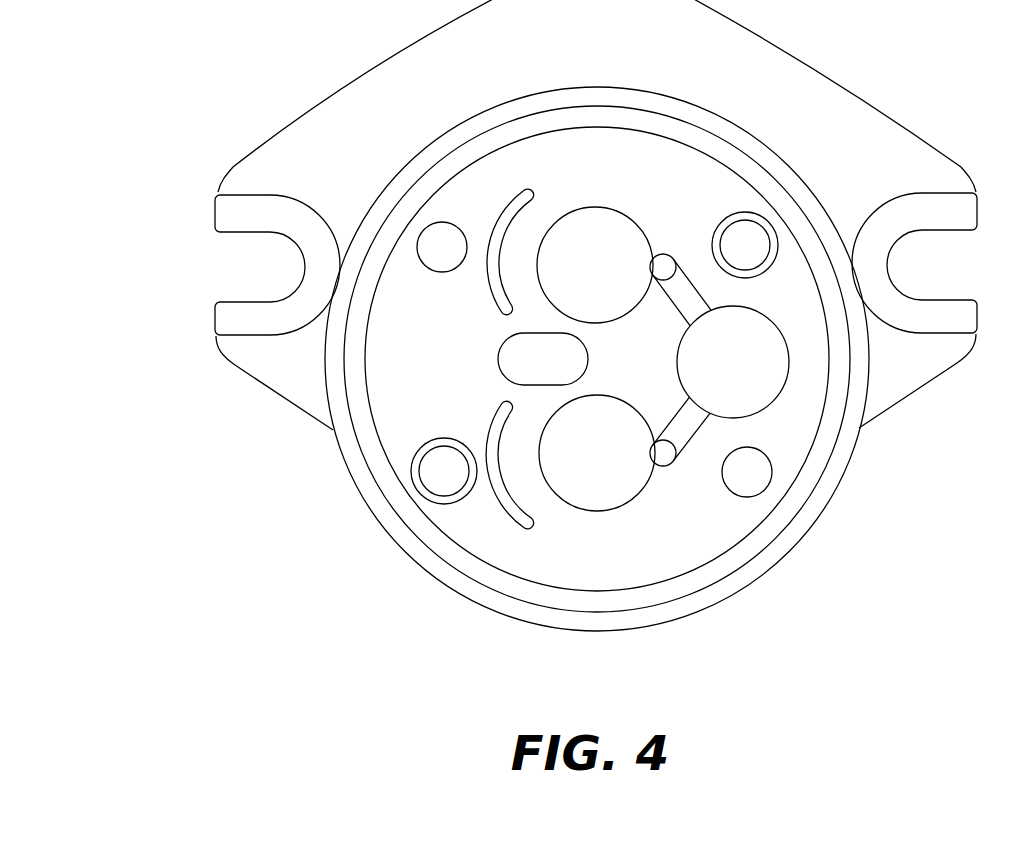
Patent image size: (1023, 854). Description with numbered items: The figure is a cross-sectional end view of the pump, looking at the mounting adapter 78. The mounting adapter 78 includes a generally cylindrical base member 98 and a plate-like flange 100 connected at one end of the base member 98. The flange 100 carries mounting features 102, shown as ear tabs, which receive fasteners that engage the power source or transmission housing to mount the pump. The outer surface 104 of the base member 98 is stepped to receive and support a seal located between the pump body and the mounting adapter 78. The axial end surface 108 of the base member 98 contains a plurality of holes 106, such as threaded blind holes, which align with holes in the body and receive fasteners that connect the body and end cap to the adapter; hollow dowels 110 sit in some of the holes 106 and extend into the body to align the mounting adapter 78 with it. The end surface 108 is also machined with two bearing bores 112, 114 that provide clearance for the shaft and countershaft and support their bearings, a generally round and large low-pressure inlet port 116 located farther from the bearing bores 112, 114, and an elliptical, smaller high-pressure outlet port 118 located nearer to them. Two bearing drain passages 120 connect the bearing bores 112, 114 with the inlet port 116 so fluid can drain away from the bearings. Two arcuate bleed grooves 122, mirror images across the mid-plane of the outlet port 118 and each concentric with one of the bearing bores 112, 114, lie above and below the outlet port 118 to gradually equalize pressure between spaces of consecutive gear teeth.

The mounting adapter 78 is at (903, 66).
The base member 98 is at (582, 566).
The flange 100 is at (577, 46).
The mounting features 102 is at (247, 301).
The outer surface 104 is at (450, 148).
The holes 106 is at (424, 259).
The axial end surface 108 is at (790, 430).
The hollow dowels 110 is at (735, 213).
The bearing bore 112 is at (576, 467).
The bearing bore 114 is at (574, 279).
The low-pressure inlet port 116 is at (712, 369).
The high-pressure outlet port 118 is at (522, 374).
The bearing drain passages 120 is at (682, 428).
The bleed grooves 122 is at (497, 278).